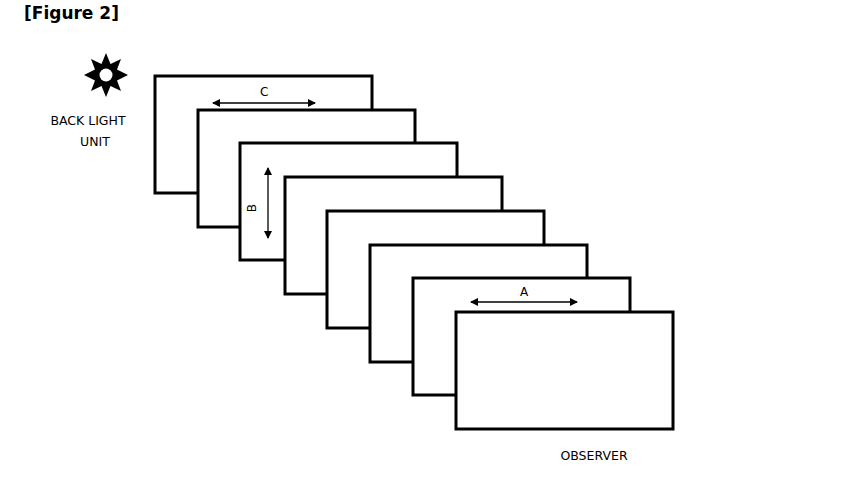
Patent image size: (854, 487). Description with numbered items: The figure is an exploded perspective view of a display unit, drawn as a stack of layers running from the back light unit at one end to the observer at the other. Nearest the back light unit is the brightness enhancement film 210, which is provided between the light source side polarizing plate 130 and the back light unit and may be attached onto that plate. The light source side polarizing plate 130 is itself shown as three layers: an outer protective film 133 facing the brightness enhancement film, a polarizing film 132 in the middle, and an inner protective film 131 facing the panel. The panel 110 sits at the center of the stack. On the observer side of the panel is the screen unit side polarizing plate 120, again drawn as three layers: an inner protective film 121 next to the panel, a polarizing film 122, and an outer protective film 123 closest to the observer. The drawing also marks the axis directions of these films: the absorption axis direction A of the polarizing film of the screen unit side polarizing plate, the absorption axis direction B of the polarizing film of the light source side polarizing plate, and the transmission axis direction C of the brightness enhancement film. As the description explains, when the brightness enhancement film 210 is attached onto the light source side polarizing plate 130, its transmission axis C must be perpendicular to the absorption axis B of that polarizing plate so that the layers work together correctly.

The brightness enhancement film 210 is at (181, 170).
The panel 110 is at (345, 310).
The light source side polarizing plate 130 is at (415, 196).
The inner protective film 131 is at (425, 235).
The polarizing film 132 is at (445, 162).
The outer protective film 133 is at (404, 123).
The screen unit side polarizing plate 120 is at (583, 332).
The inner protective film 121 is at (578, 258).
The polarizing film 122 is at (615, 292).
The outer protective film 123 is at (593, 370).